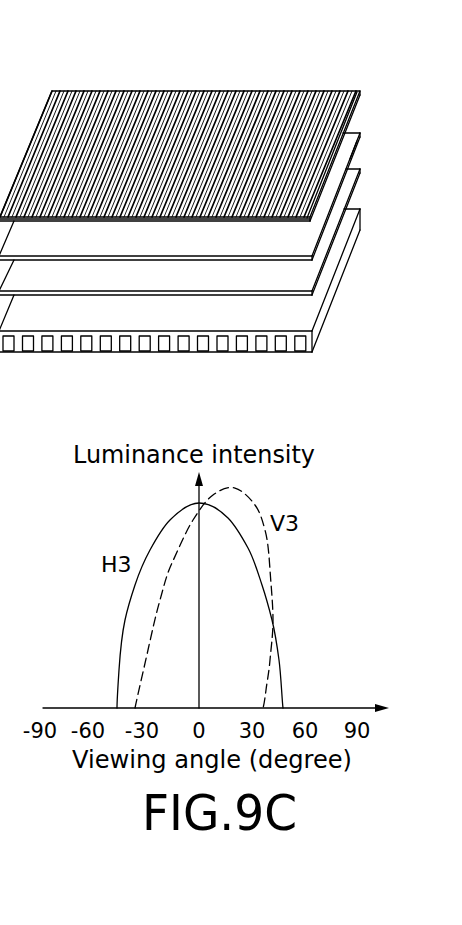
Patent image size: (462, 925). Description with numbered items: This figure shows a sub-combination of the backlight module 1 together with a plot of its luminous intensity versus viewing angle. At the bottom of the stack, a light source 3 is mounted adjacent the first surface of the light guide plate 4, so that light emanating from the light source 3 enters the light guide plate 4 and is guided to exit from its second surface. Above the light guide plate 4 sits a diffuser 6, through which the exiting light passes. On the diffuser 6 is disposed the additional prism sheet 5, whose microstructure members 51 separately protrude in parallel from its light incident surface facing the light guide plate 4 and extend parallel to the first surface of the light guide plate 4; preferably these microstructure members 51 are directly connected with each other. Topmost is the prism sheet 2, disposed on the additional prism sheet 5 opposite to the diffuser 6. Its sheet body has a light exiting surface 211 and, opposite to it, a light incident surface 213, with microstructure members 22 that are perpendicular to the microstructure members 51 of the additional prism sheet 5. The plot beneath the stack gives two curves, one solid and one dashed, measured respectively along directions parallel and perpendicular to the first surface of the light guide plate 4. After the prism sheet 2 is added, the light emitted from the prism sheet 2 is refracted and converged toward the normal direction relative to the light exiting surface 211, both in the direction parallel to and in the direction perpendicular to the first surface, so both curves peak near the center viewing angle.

The backlight module 1 is at (6, 116).
The prism sheet 2 is at (124, 84).
The light exiting surface 211 is at (202, 93).
The microstructure members 22 is at (310, 90).
The light incident surface 213 is at (295, 218).
The additional prism sheet 5 is at (366, 109).
The microstructure members 51 is at (356, 162).
The diffuser 6 is at (347, 186).
The light guide plate 4 is at (308, 308).
The light source 3 is at (82, 358).